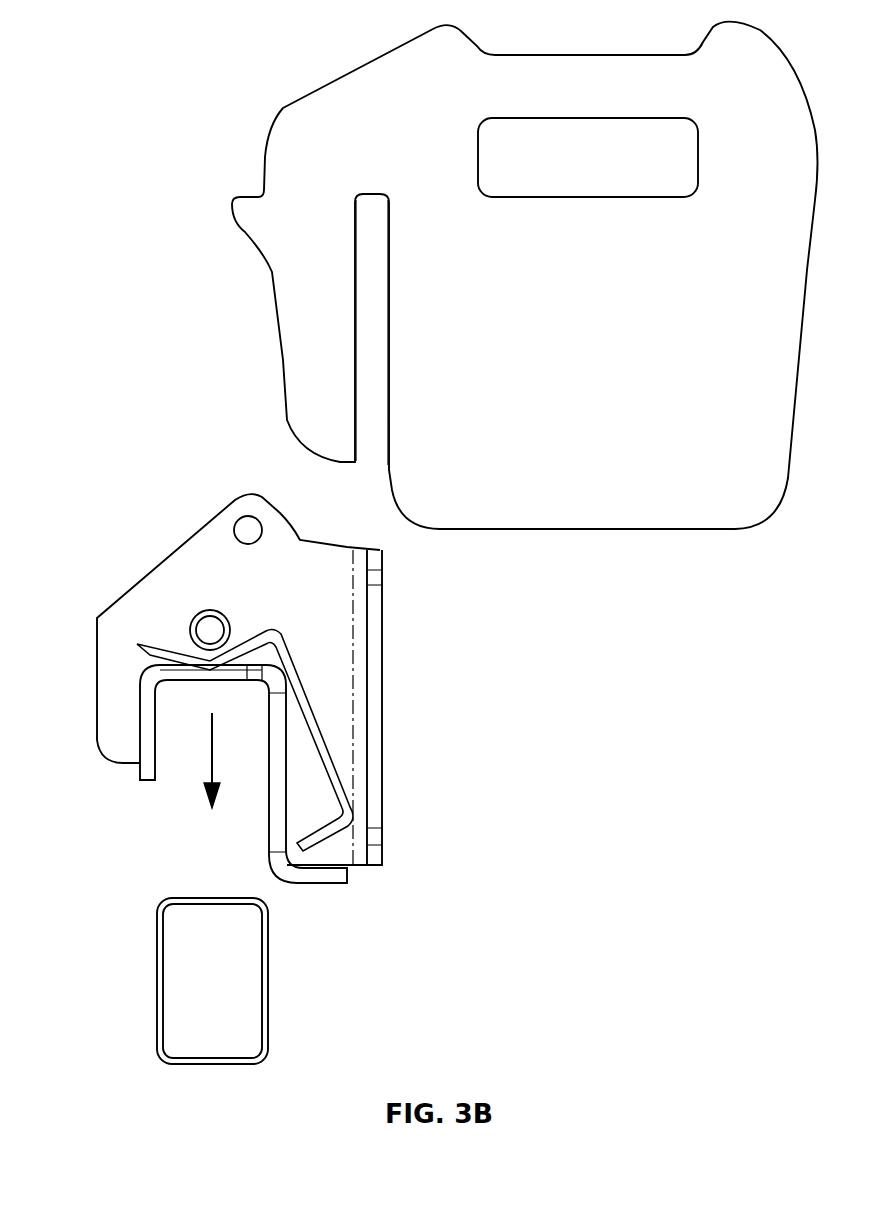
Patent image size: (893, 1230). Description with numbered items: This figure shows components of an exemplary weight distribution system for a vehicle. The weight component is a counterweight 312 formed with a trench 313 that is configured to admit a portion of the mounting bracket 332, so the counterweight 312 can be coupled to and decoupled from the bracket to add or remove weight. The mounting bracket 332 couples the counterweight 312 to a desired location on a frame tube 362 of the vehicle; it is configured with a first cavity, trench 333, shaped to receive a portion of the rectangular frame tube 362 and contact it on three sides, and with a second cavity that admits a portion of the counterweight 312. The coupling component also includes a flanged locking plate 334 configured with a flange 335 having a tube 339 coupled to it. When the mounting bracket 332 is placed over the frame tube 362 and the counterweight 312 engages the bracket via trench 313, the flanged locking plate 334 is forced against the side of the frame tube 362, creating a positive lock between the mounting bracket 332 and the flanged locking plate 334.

The counterweight 312 is at (372, 110).
The trench 313 is at (375, 387).
The mounting bracket 332 is at (200, 557).
The tube 339 is at (200, 607).
The flange 335 is at (140, 645).
The trench 333 is at (185, 740).
The flanged locking plate 334 is at (325, 745).
The frame tube 362 is at (264, 1000).